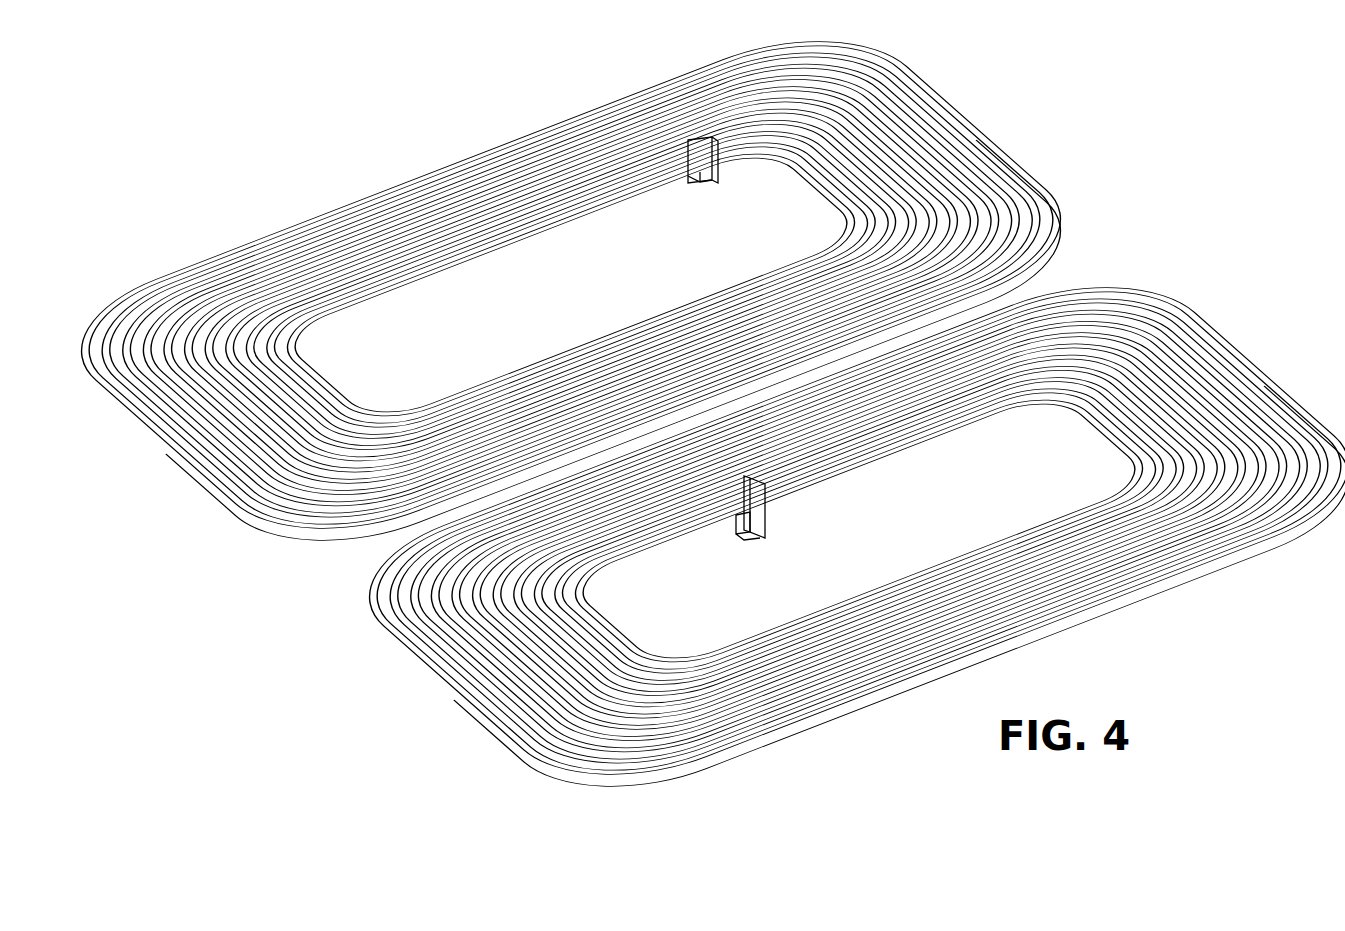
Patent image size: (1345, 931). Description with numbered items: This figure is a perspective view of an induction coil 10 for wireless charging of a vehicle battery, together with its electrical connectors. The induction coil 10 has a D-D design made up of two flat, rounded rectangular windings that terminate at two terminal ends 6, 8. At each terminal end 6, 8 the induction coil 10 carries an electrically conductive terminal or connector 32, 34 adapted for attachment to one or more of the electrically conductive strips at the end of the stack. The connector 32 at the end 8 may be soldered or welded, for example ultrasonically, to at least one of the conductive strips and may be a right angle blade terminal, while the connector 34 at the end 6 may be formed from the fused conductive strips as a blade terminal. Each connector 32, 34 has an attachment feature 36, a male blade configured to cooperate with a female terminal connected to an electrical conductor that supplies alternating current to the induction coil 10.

The induction coil 10 is at (690, 413).
The terminal end 6 is at (695, 212).
The terminal end 8 is at (752, 522).
The attachment feature 36 is at (702, 160).
The electrically conductive connector 34 is at (705, 178).
The electrically conductive connector 32 is at (762, 541).